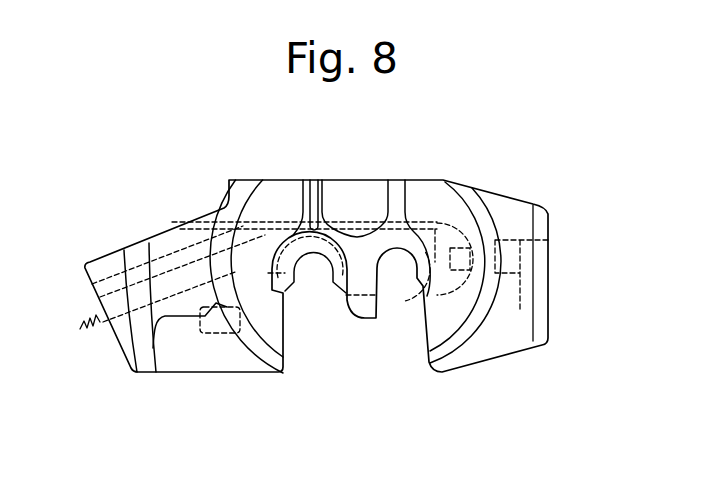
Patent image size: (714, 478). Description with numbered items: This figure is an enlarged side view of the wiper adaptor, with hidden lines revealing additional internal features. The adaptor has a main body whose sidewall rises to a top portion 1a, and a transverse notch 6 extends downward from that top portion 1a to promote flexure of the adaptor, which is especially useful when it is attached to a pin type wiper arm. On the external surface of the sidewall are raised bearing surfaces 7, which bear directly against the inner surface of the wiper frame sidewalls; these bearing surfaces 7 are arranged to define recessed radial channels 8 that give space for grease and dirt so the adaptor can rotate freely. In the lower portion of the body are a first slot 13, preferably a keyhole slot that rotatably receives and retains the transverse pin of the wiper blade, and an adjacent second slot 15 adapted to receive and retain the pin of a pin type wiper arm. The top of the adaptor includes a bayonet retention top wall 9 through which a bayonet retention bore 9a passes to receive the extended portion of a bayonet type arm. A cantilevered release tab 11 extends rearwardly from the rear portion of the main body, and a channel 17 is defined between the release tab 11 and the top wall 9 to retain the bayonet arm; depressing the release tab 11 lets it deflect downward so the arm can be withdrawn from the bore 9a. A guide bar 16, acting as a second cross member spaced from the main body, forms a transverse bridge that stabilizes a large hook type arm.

The top portion of sidewall 1a is at (368, 180).
The transverse notch 6 is at (313, 180).
The raised bearing surfaces 7 is at (462, 184).
The recessed radial channels 8 is at (207, 352).
The bayonet retention top wall 9 is at (175, 243).
The bayonet retention bore 9a is at (133, 240).
The cantilevered release tab 11 is at (80, 329).
The first slot 13 is at (397, 268).
The second slot 15 is at (312, 268).
The guide bar 16 is at (160, 348).
The channel 17 is at (118, 290).